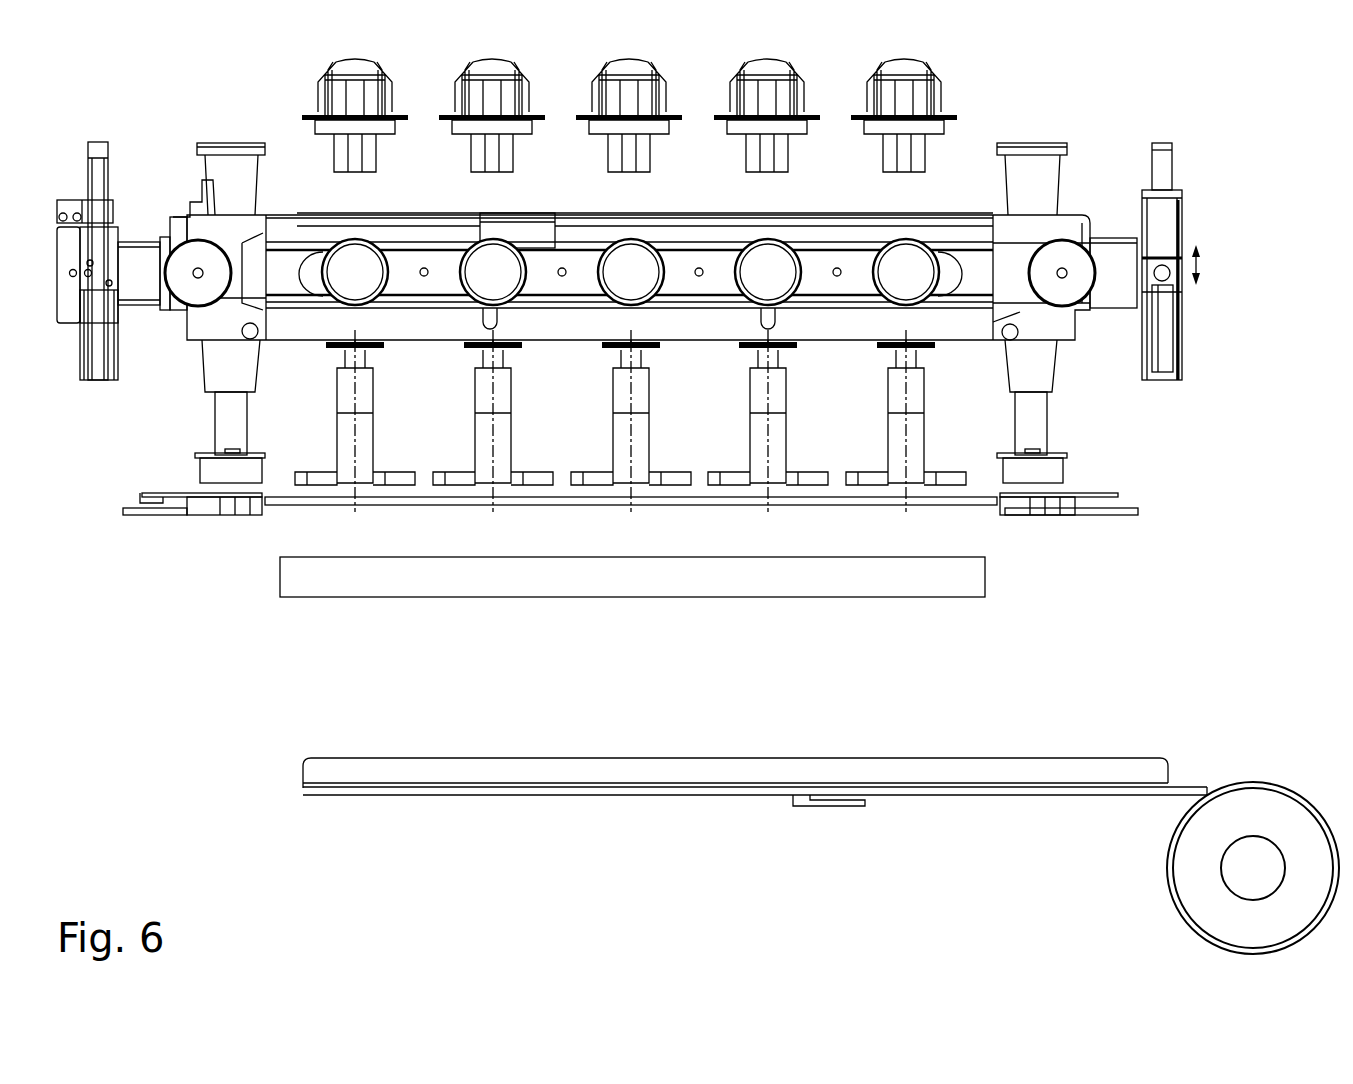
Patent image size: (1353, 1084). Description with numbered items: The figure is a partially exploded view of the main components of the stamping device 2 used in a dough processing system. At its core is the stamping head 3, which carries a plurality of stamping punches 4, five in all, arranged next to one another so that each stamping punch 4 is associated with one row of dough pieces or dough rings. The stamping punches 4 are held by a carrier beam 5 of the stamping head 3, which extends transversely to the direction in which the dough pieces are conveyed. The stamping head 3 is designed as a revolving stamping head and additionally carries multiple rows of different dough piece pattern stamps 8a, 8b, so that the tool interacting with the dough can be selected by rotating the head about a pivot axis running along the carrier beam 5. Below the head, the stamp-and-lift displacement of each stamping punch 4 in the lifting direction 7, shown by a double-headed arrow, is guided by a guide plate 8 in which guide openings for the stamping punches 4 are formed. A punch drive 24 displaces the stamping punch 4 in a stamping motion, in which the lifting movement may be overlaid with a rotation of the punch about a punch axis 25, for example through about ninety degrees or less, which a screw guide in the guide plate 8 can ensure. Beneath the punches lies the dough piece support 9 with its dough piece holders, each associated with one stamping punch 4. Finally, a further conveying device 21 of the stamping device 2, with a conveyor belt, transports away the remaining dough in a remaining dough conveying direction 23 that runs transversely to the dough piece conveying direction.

The stamping device 2 is at (1230, 484).
The stamping head 3 is at (1080, 333).
The stamping punch 4 is at (618, 440).
The carrier beam 5 is at (973, 231).
The lifting direction 7 is at (1203, 265).
The guide plate 8 is at (323, 495).
The dough piece pattern stamps 8a is at (775, 287).
The dough piece pattern stamps 8b is at (945, 104).
The dough piece support 9 is at (267, 577).
The conveying device 21 is at (1188, 759).
The remaining dough conveying direction 23 is at (268, 760).
The punch drive 24 is at (1192, 188).
The punch axis 25 is at (908, 438).